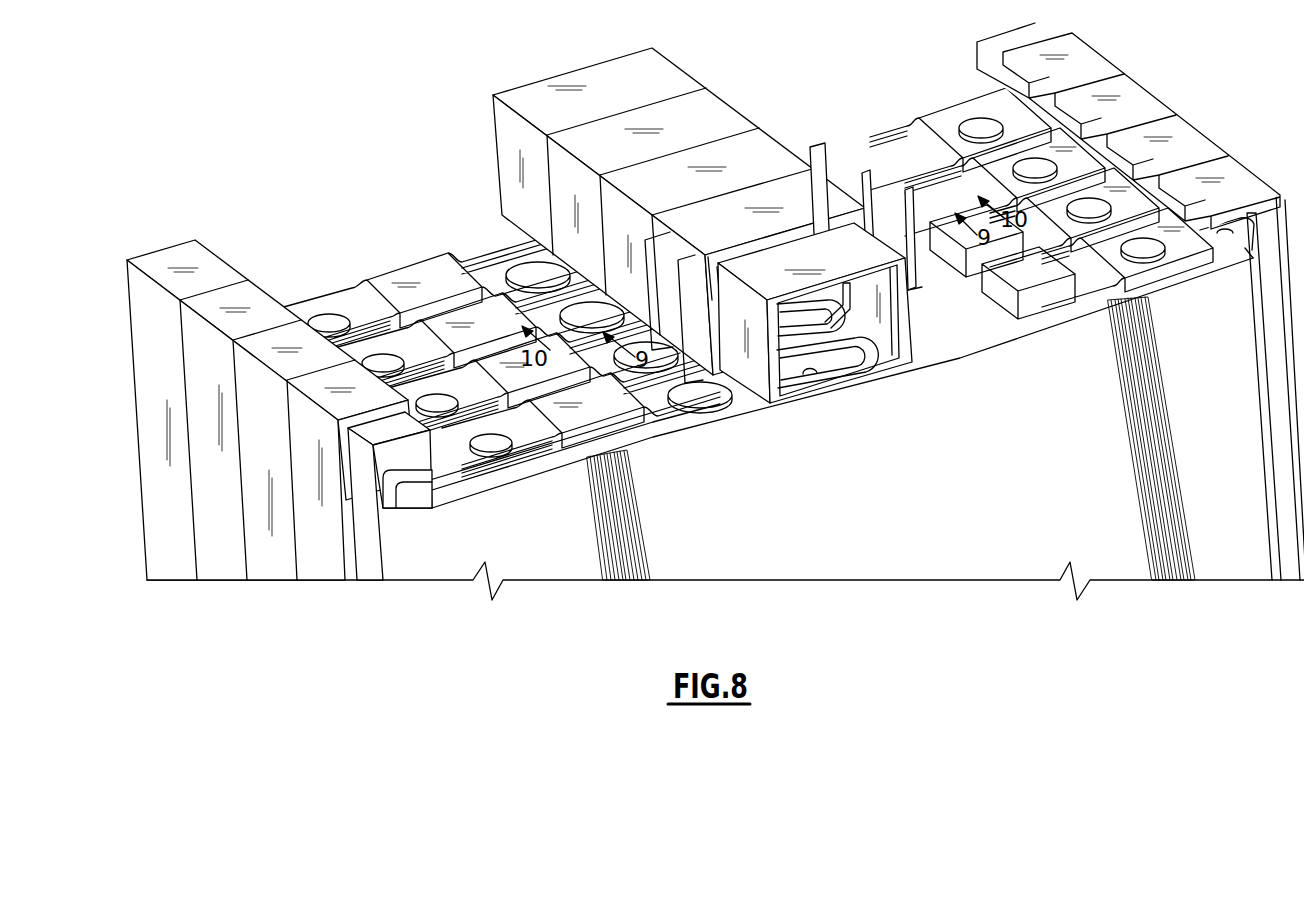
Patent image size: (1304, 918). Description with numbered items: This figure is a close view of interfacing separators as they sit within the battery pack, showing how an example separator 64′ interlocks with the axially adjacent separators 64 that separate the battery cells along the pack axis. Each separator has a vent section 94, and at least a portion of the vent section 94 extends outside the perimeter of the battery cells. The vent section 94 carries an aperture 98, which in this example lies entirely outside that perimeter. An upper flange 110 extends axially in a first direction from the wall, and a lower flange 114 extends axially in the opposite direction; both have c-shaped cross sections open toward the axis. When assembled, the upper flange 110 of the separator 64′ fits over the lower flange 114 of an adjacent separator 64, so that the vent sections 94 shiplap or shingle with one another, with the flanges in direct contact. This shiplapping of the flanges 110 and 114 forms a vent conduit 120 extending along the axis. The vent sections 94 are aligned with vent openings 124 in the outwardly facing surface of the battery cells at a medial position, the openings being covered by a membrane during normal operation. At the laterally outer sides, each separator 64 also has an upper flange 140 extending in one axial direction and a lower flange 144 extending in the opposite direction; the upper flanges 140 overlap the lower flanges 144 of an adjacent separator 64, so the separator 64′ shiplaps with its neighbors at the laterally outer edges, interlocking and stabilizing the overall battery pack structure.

The separator 64 is at (227, 305).
The separator 64′ is at (340, 408).
The upper flange 140 is at (340, 397).
The lower flange 144 is at (380, 430).
The vent section 94 is at (714, 197).
The upper flange 110 is at (822, 200).
The lower flange 114 is at (760, 358).
The vent conduit 120 is at (897, 352).
The aperture 98 is at (831, 334).
The vent openings 124 is at (813, 372).